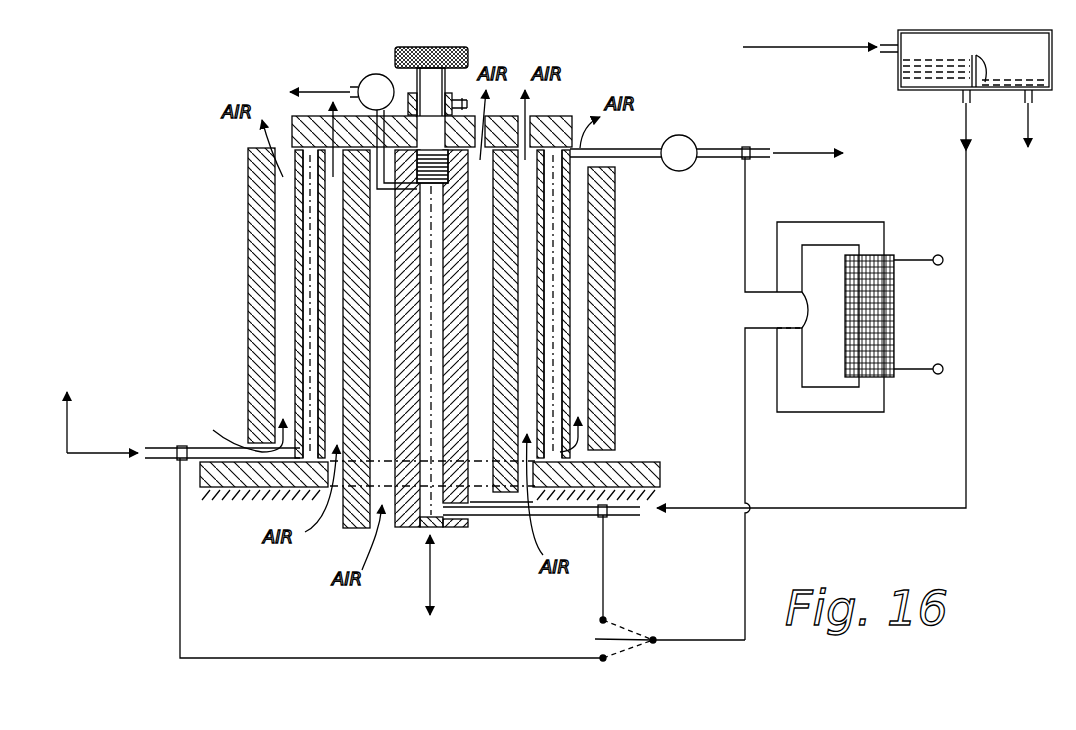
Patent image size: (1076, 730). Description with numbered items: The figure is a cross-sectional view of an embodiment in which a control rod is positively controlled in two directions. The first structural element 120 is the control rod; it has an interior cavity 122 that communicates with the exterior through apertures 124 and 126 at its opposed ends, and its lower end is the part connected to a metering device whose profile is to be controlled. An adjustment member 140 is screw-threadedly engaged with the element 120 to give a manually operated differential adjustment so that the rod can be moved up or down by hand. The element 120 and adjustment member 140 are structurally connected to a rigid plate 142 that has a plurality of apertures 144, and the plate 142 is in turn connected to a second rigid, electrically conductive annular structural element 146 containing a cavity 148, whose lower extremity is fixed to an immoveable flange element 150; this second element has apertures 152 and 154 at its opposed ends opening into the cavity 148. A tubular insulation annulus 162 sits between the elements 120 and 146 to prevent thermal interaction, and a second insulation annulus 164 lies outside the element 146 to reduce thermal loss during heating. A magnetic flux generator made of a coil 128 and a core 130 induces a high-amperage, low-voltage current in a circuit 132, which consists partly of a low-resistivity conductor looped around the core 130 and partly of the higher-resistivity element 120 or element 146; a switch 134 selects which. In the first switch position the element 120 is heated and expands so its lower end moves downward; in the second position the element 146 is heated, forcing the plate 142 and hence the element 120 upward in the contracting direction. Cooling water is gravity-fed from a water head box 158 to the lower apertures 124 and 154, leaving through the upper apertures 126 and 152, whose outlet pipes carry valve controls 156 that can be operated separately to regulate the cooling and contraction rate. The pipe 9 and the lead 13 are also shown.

The adjustment member 140 is at (466, 48).
The rigid plate 142 is at (553, 120).
The apertures 144 is at (482, 118).
The aperture 152 is at (578, 220).
The valve controls 156 is at (366, 76).
The aperture 126 is at (383, 196).
The second insulation tubular annulus 164 is at (248, 310).
The second rigid electrically conductive structural annular element 146 is at (303, 243).
The cavity 148 is at (307, 262).
The tubular insulation annulus 162 is at (350, 517).
The first structural element 120 is at (407, 534).
The interior cavity 122 is at (432, 435).
The aperture 124 is at (467, 515).
The tube 9 is at (513, 510).
The immoveable flange element 150 is at (260, 478).
The aperture 154 is at (247, 448).
The circuit lead 13 is at (328, 657).
The circuit 132 is at (603, 565).
The switch 134 is at (622, 637).
The core 130 is at (862, 228).
The coil 128 is at (897, 337).
The water head box 158 is at (920, 92).